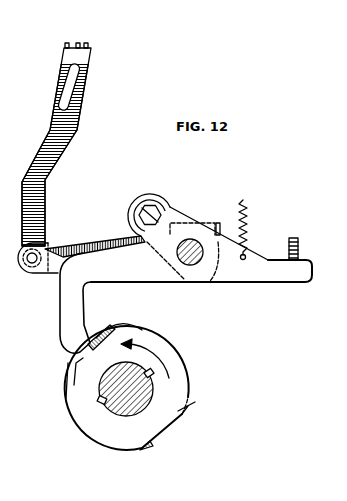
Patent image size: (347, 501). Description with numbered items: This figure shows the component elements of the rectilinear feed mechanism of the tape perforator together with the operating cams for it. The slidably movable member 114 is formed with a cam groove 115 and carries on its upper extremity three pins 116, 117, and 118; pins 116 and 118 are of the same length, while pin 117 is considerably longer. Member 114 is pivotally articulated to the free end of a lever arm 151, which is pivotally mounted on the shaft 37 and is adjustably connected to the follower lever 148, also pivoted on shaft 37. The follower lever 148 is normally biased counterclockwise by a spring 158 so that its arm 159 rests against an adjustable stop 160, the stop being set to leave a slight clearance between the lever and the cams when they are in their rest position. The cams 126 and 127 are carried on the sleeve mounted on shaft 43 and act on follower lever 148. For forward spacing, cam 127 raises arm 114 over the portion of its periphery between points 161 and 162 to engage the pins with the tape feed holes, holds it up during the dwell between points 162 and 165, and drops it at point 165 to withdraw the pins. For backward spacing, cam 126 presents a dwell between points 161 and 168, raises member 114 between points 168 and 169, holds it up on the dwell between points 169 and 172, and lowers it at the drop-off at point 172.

The shaft 37 is at (190, 240).
The shaft 43 is at (153, 387).
The slidably movable member 114 is at (56, 172).
The cam groove 115 is at (74, 92).
The pin 116 is at (66, 45).
The pin 117 is at (78, 43).
The pin 118 is at (87, 44).
The cam 126 is at (188, 409).
The cam 127 is at (150, 449).
The follower lever 148 is at (85, 304).
The lever arm 151 is at (69, 250).
The spring 158 is at (247, 222).
The arm 159 is at (297, 276).
The adjustable stop 160 is at (294, 238).
The point 161 is at (88, 358).
The point 162 is at (112, 326).
The point 165 is at (187, 392).
The point 168 is at (95, 352).
The point 169 is at (151, 334).
The point 172 is at (190, 413).